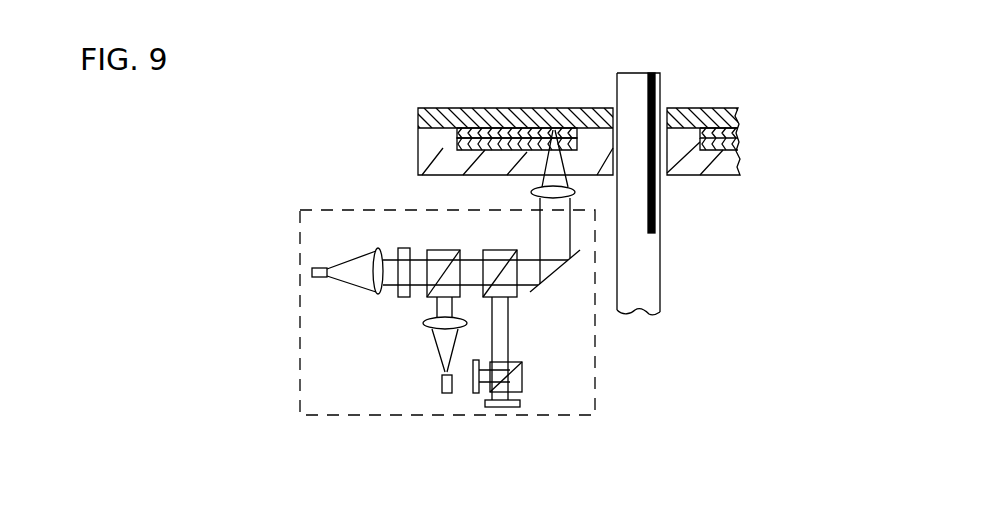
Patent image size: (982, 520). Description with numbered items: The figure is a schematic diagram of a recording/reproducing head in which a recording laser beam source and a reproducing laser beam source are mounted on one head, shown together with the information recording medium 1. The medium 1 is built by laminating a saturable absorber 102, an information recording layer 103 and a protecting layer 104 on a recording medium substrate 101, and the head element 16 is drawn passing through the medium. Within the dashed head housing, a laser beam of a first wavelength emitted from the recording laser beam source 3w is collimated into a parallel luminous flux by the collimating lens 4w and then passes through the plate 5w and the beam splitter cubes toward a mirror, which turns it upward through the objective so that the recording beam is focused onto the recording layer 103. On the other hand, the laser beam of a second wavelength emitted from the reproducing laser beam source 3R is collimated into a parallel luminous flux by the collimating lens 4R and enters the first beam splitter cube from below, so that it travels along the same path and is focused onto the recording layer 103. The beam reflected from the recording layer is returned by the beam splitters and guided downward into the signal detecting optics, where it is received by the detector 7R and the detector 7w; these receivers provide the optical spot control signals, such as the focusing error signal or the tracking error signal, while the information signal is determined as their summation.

The information recording medium 1 is at (718, 114).
The magnetic head 16 is at (632, 83).
The protecting layer 104 is at (418, 120).
The information recording layer 103 is at (457, 138).
The saturable absorber 102 is at (453, 150).
The recording medium substrate 101 is at (423, 163).
The recording laser beam source 3w is at (310, 265).
The collimating lens 4w is at (371, 287).
The beam shaping plate for writing beam 5w is at (415, 252).
The collimating lens 4R is at (430, 327).
The reproducing laser beam source 3R is at (442, 390).
The photodetector for reading beam 7R is at (478, 390).
The photodetector for writing beam 7w is at (517, 408).